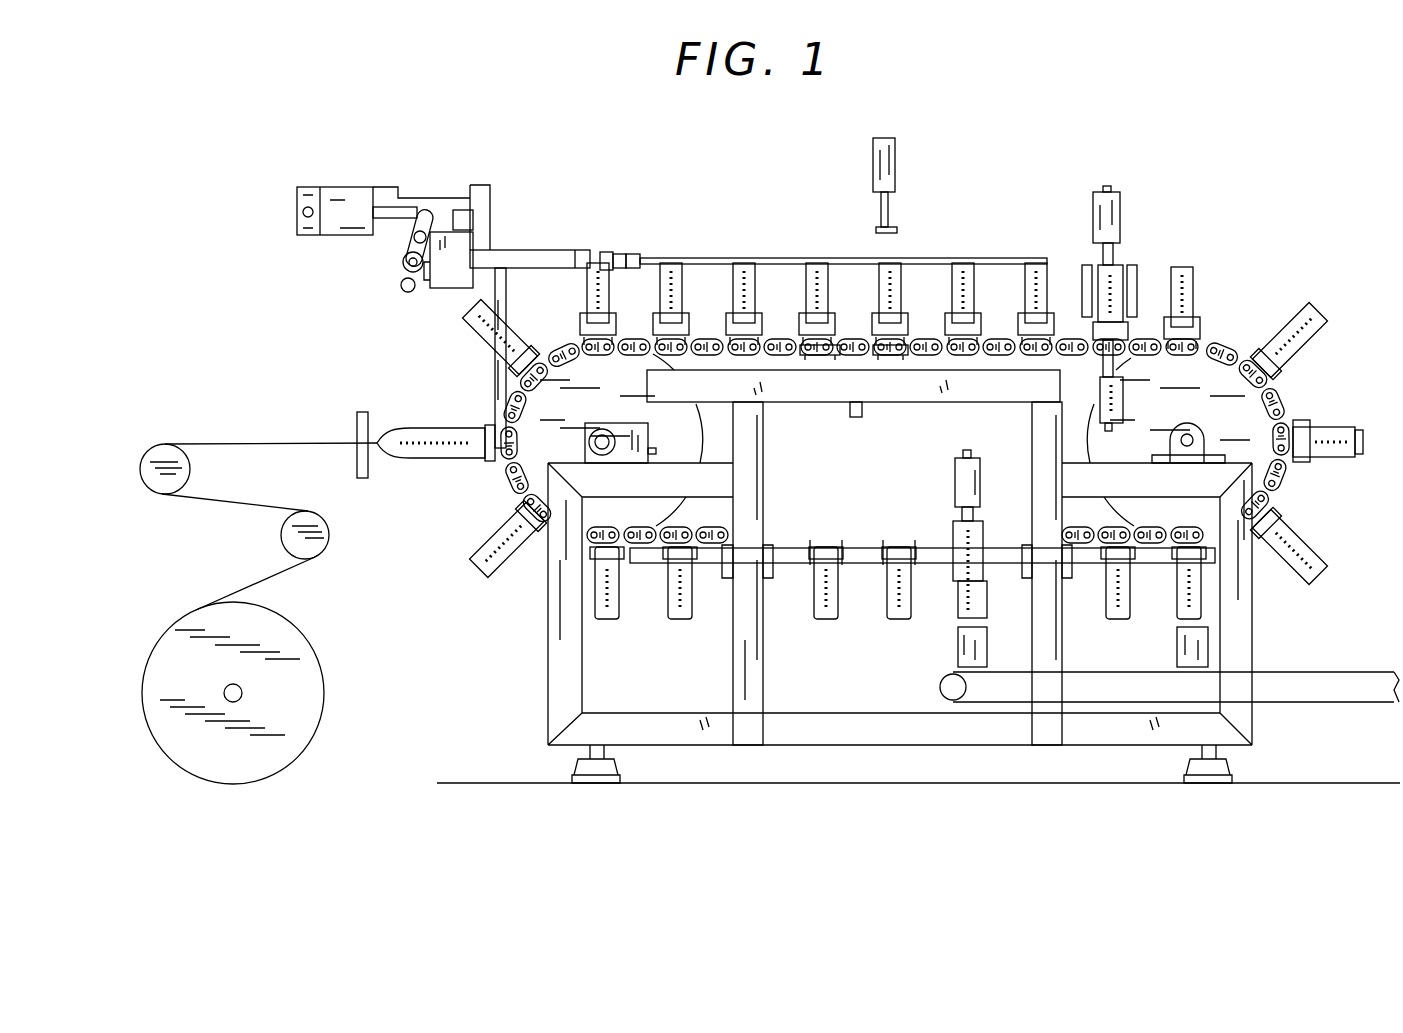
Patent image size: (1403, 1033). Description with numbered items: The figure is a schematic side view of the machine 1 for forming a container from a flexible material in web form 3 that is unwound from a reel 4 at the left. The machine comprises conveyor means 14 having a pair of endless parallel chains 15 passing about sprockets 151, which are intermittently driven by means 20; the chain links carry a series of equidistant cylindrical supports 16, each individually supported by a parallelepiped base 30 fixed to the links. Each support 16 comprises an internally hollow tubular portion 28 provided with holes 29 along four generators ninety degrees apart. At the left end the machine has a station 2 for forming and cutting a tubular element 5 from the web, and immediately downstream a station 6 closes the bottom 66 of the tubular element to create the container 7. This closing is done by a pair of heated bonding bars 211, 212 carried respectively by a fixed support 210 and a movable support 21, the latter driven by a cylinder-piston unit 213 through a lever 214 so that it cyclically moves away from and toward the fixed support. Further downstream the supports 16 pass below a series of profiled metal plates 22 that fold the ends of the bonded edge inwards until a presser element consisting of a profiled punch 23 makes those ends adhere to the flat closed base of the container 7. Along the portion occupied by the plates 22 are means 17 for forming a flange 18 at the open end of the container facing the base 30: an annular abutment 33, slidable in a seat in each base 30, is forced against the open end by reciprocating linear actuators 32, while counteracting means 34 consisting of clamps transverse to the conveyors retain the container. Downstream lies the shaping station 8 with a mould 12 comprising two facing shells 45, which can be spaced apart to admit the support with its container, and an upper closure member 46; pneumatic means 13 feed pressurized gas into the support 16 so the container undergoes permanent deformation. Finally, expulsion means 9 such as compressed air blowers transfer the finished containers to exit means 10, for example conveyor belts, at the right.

The machine 1 is at (258, 635).
The station for forming and cutting 2 is at (280, 392).
The flexible material in web form 3 is at (250, 580).
The reel 4 is at (303, 693).
The tubular element 5 is at (464, 428).
The station for closing the bottom 6 is at (344, 215).
The container 7 is at (614, 290).
The shaping station 8 is at (1108, 188).
The expulsion means 9 is at (952, 566).
The exit means 10 is at (1322, 703).
The mould 12 is at (1156, 290).
The pneumatic means 13 is at (1110, 405).
The conveyor means 14 is at (492, 532).
The endless parallel chains 15 is at (502, 511).
The cylindrical supports 16 is at (866, 620).
The means for forming a flange 17 is at (851, 297).
The flange 18 is at (1177, 628).
The driving means 20 is at (615, 425).
The movable support 21 is at (530, 252).
The profiled metal plates 22 is at (731, 258).
The profiled punch 23 is at (895, 180).
The tubular portion 28 is at (694, 612).
The holes 29 is at (666, 592).
The parallelepiped base 30 is at (812, 580).
The reciprocating linear actuators 32 is at (862, 412).
The annular abutment 33 is at (881, 335).
The counteracting means 34 is at (798, 340).
The facing shells 45 is at (1138, 290).
The upper closure member 46 is at (1114, 266).
The bottom 66 is at (963, 263).
The sprockets 151 is at (530, 454).
The fixed support 210 is at (634, 254).
The heated bonding bar 211 is at (617, 254).
The heated bonding bar 212 is at (604, 252).
The cylinder-piston unit 213 is at (355, 200).
The lever 214 is at (393, 272).